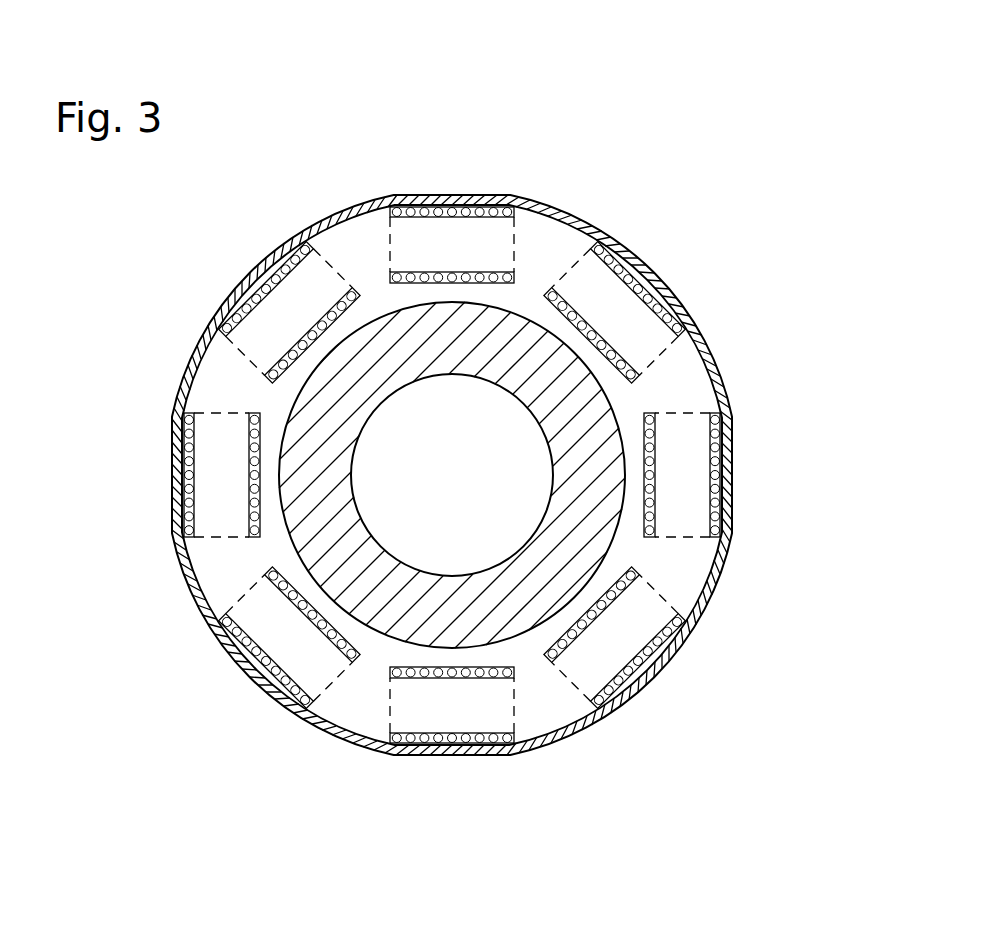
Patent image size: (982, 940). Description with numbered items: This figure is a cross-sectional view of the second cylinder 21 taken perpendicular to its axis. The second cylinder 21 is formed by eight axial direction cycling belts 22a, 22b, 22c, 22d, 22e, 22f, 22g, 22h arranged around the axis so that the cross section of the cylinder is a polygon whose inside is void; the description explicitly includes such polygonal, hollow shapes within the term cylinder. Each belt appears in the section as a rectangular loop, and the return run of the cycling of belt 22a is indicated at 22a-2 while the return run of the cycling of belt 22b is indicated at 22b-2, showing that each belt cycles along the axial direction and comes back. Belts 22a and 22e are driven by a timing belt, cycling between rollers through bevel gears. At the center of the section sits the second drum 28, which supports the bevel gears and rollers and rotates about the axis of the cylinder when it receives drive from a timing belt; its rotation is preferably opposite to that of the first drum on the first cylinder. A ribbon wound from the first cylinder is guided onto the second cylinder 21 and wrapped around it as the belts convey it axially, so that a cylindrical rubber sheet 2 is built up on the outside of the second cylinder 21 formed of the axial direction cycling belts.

The cylindrical rubber sheet 2 is at (538, 197).
The second cylinder 21 is at (531, 246).
The axial direction cycling belt 22a is at (321, 210).
The return of cycling of the axial direction cycling belt 22a-2 is at (260, 221).
The axial direction cycling belt 22b is at (194, 358).
The return of cycling of the cycling belt 22b-2 is at (283, 366).
The axial direction cycling belt 22c is at (188, 500).
The axial direction cycling belt 22d is at (293, 687).
The axial direction cycling belt 22e is at (487, 733).
The axial direction cycling belt 22f is at (665, 625).
The axial direction cycling belt 22g is at (710, 430).
The axial direction cycling belt 22h is at (604, 265).
The second drum 28 is at (610, 547).